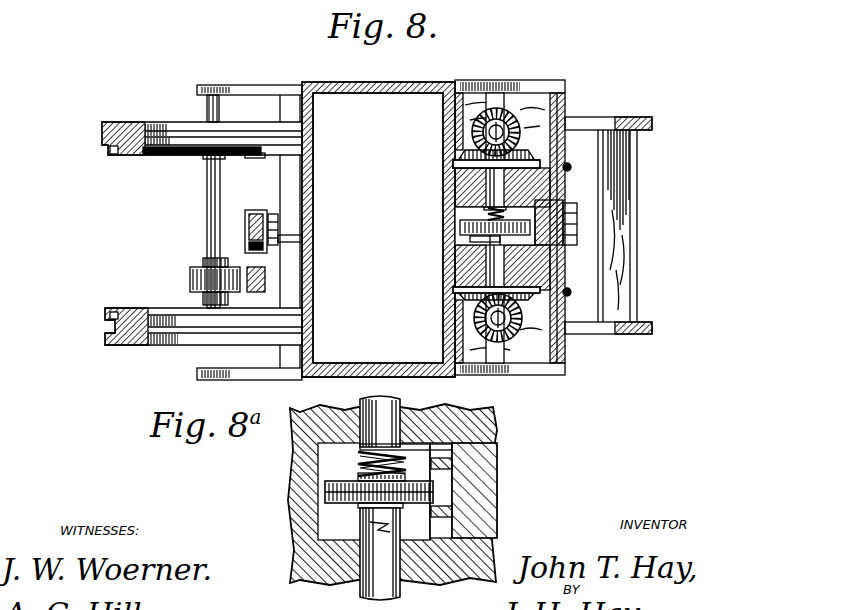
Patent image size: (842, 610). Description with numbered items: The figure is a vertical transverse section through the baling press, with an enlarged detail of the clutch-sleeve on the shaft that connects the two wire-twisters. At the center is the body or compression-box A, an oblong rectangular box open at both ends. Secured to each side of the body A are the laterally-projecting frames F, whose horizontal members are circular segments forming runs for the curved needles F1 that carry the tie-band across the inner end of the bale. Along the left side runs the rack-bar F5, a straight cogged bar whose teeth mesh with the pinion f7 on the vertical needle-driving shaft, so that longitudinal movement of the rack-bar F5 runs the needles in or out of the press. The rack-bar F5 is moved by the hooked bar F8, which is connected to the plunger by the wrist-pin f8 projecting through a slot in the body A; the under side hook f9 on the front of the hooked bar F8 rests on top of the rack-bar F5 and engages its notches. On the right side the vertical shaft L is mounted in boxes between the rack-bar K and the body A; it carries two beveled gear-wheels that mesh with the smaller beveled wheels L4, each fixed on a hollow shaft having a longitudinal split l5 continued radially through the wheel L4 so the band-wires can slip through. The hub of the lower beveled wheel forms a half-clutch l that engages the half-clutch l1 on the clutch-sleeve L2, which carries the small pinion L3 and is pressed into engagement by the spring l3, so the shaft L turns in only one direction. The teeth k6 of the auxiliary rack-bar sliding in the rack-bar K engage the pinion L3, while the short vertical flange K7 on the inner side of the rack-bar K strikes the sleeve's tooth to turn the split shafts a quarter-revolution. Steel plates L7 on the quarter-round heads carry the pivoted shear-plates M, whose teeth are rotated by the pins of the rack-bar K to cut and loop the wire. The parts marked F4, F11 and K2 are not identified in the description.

In FIG. 8, the body or compression-box A is at (399, 83).
In FIG. 8, the laterally-projecting frame F is at (163, 130).
In FIG. 8, the curved needle F1 is at (116, 318).
In FIG. 8, the post F4 is at (630, 213).
In FIG. 8, the rack-bar F5 is at (265, 283).
In FIG. 8, the hooked bar F8 is at (253, 221).
In FIG. 8, the bracket F11 is at (255, 155).
In FIG. 8, the pinion f7 is at (190, 281).
In FIG. 8, the wrist-pin f8 is at (302, 250).
In FIG. 8, the under side hook f9 is at (281, 215).
In FIG. 8, the vertical shaft L is at (455, 187).
In FIG. 8A, the vertical shaft L is at (388, 415).
In FIG. 8, the clutch-sleeve L2 is at (490, 217).
In FIG. 8A, the clutch-sleeve L2 is at (358, 477).
In FIG. 8, the small pinion L3 is at (490, 228).
In FIG. 8A, the small pinion L3 is at (325, 497).
In FIG. 8, the beveled toothed wheel L4 is at (511, 122).
In FIG. 8, the steel plate L7 is at (455, 156).
In FIG. 8, the half-clutch l is at (470, 271).
In FIG. 8A, the half-clutch l is at (380, 554).
In FIG. 8, the half-clutch on sleeve l1 is at (470, 242).
In FIG. 8A, the half-clutch on sleeve l1 is at (368, 527).
In FIG. 8, the spring l3 is at (531, 140).
In FIG. 8A, the spring l3 is at (358, 451).
In FIG. 8, the longitudinal split l5 is at (496, 125).
In FIG. 8, the rack-bar K is at (565, 205).
In FIG. 8A, the rack-bar K is at (497, 481).
In FIG. 8, the flange K2 is at (577, 231).
In FIG. 8A, the short vertical flange K7 is at (435, 452).
In FIG. 8A, the teeth of auxiliary rack-bar k6 is at (432, 478).
In FIG. 8, the shear-plate M is at (566, 148).